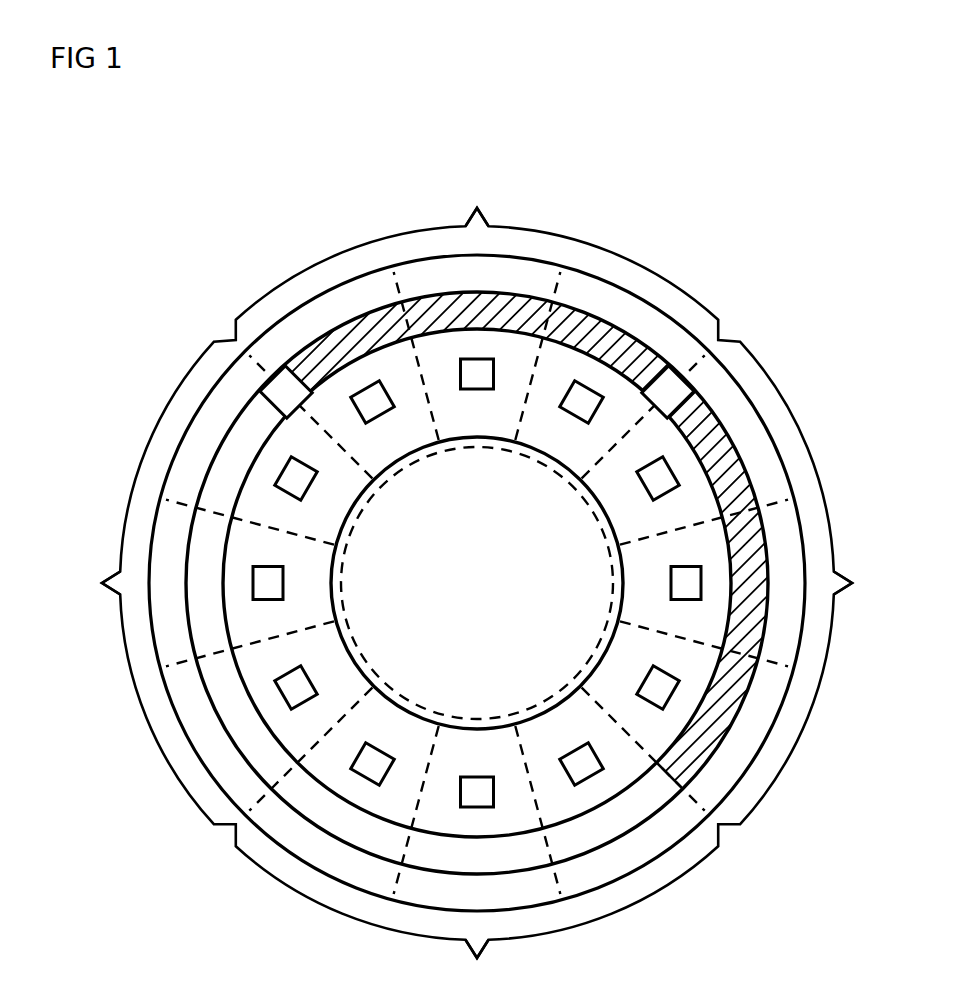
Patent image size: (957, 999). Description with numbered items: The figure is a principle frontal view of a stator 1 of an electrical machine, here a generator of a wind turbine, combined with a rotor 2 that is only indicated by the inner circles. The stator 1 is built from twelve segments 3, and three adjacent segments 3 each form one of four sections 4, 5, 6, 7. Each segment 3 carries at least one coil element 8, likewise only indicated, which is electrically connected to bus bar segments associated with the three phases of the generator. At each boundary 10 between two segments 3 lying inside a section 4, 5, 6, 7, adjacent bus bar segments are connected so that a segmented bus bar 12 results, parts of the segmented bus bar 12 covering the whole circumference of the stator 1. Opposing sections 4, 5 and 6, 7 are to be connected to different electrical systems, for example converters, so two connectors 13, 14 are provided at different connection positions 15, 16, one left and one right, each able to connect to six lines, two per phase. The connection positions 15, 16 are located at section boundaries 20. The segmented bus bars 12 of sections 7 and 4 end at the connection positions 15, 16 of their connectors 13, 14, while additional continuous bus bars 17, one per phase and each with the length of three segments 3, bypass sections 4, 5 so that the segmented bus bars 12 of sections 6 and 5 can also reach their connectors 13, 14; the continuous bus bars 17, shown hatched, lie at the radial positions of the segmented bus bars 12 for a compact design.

The stator 1 is at (624, 174).
The rotor 2 is at (342, 567).
The segment 3 is at (742, 745).
The section 4 is at (475, 201).
The section 5 is at (477, 966).
The section 6 is at (852, 581).
The section 7 is at (100, 581).
The coil element 8 is at (475, 774).
The boundary 10 is at (420, 363).
The segmented bus bar 12 is at (232, 715).
The connector 13 is at (277, 373).
The connector 14 is at (677, 373).
The connection position 15 is at (256, 413).
The connection position 16 is at (703, 413).
The continuous bus bar 17 is at (378, 312).
The section boundary 20 is at (330, 388).